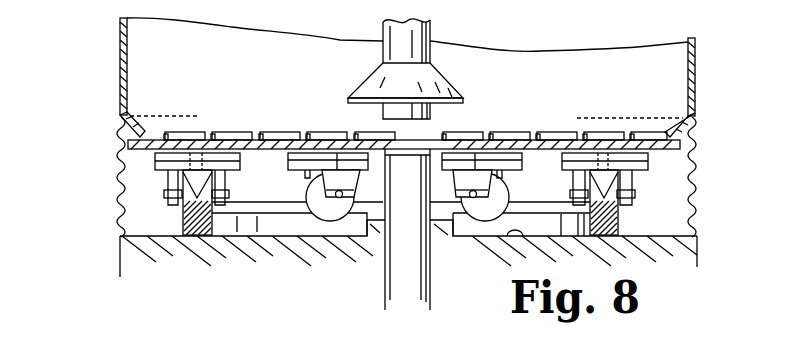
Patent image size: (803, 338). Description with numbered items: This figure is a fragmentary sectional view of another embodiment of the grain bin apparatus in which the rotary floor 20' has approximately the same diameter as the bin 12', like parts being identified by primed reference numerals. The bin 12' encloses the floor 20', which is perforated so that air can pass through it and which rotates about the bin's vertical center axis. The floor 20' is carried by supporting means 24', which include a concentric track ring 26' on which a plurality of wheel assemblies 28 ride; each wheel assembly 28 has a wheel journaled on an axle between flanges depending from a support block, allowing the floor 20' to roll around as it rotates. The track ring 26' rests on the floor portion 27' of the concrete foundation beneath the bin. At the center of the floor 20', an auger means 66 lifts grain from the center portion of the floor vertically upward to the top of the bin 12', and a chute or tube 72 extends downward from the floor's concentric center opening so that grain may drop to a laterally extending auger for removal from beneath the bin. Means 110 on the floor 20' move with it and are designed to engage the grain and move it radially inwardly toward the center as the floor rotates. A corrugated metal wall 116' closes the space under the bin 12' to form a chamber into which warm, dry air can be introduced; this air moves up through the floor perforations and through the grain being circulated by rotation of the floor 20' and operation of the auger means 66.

The bin 12' is at (432, 77).
The floor 20' is at (720, 162).
The means for supporting the floor 24' is at (452, 182).
The track ring 26' is at (421, 205).
The floor portion 27' is at (408, 257).
The wheel assemblies 28 is at (150, 185).
The auger means 66 is at (447, 38).
The chute or tube 72 is at (384, 273).
The means for moving the grain radially inwardly 110 is at (256, 113).
The corrugated metal wall 116' is at (403, 180).